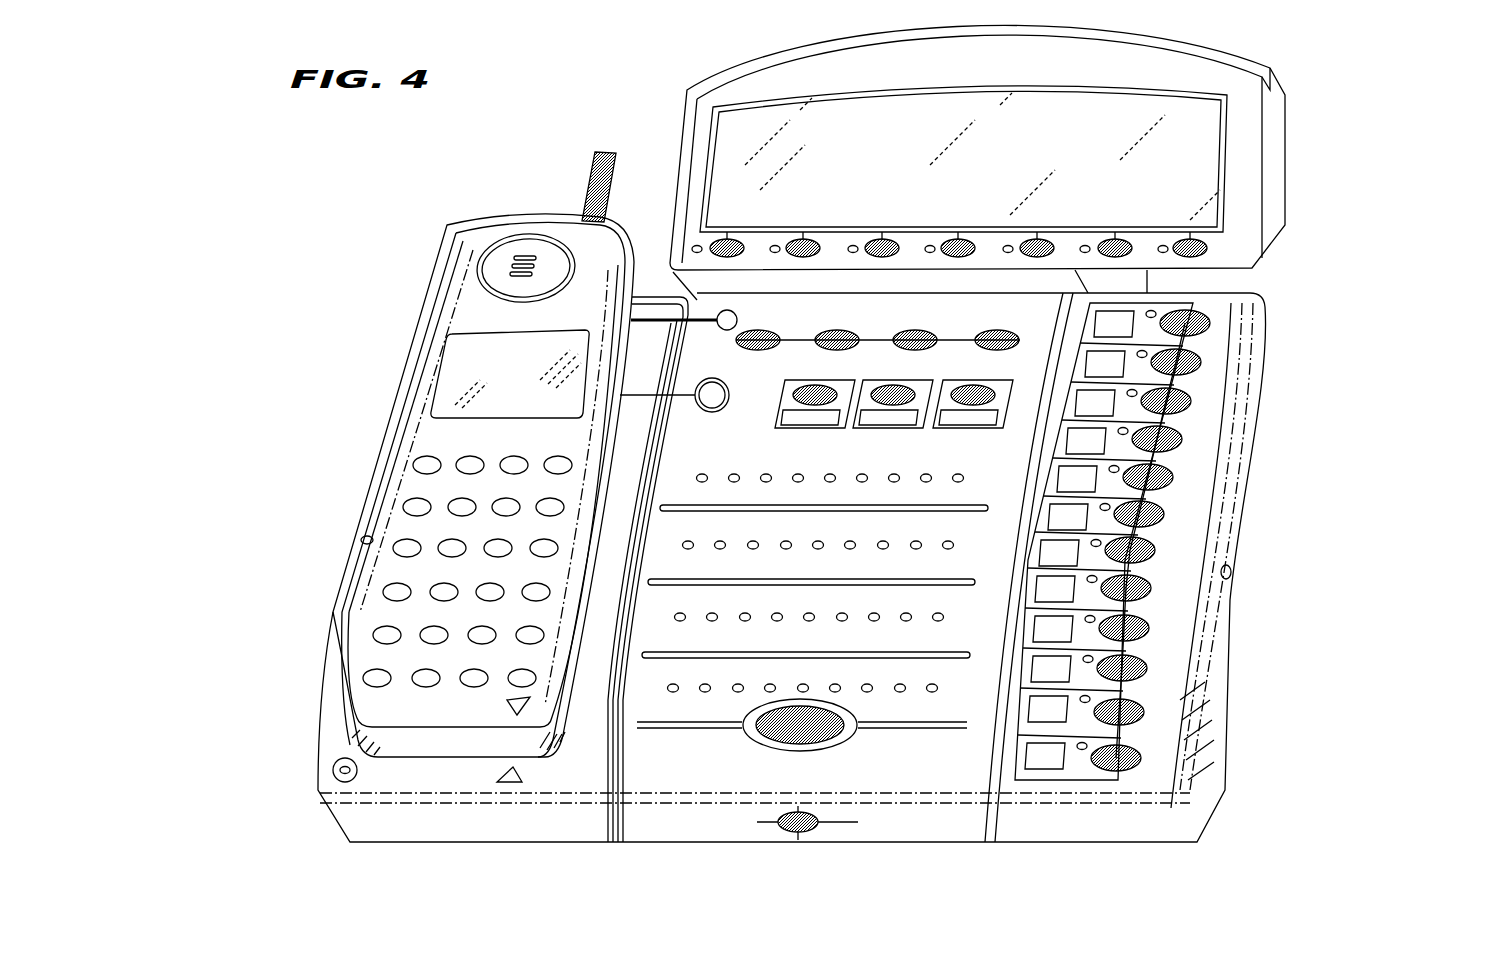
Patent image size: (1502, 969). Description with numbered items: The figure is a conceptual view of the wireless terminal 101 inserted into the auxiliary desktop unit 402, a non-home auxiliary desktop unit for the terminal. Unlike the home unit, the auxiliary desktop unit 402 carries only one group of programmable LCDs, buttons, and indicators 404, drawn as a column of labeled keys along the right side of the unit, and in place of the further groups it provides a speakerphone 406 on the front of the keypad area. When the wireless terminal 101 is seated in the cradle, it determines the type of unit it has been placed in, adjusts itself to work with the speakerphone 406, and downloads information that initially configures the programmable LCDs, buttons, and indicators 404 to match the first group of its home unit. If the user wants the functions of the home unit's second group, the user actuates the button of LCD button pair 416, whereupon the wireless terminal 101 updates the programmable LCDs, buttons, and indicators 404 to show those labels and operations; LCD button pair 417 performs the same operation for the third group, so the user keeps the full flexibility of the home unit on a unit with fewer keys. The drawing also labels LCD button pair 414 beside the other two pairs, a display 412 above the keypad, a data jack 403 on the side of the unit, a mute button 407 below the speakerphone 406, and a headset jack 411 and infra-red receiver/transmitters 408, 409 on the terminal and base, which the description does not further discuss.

The wireless terminal 101 is at (447, 293).
The auxiliary desktop unit 402 is at (1200, 383).
The data jack 403 is at (1232, 572).
The programmable LCDs, buttons, and indicators 404 is at (1150, 650).
The speakerphone 406 is at (717, 695).
The mute button 407 is at (810, 750).
The infra-red receiver/transmitter 408 is at (495, 773).
The infra-red receiver/transmitter 409 is at (507, 702).
The headset jack 411 is at (361, 538).
The display 412 is at (1197, 145).
The pair 414 is at (778, 408).
The LCD button pair 416 is at (856, 408).
The LCD button pair 417 is at (936, 408).